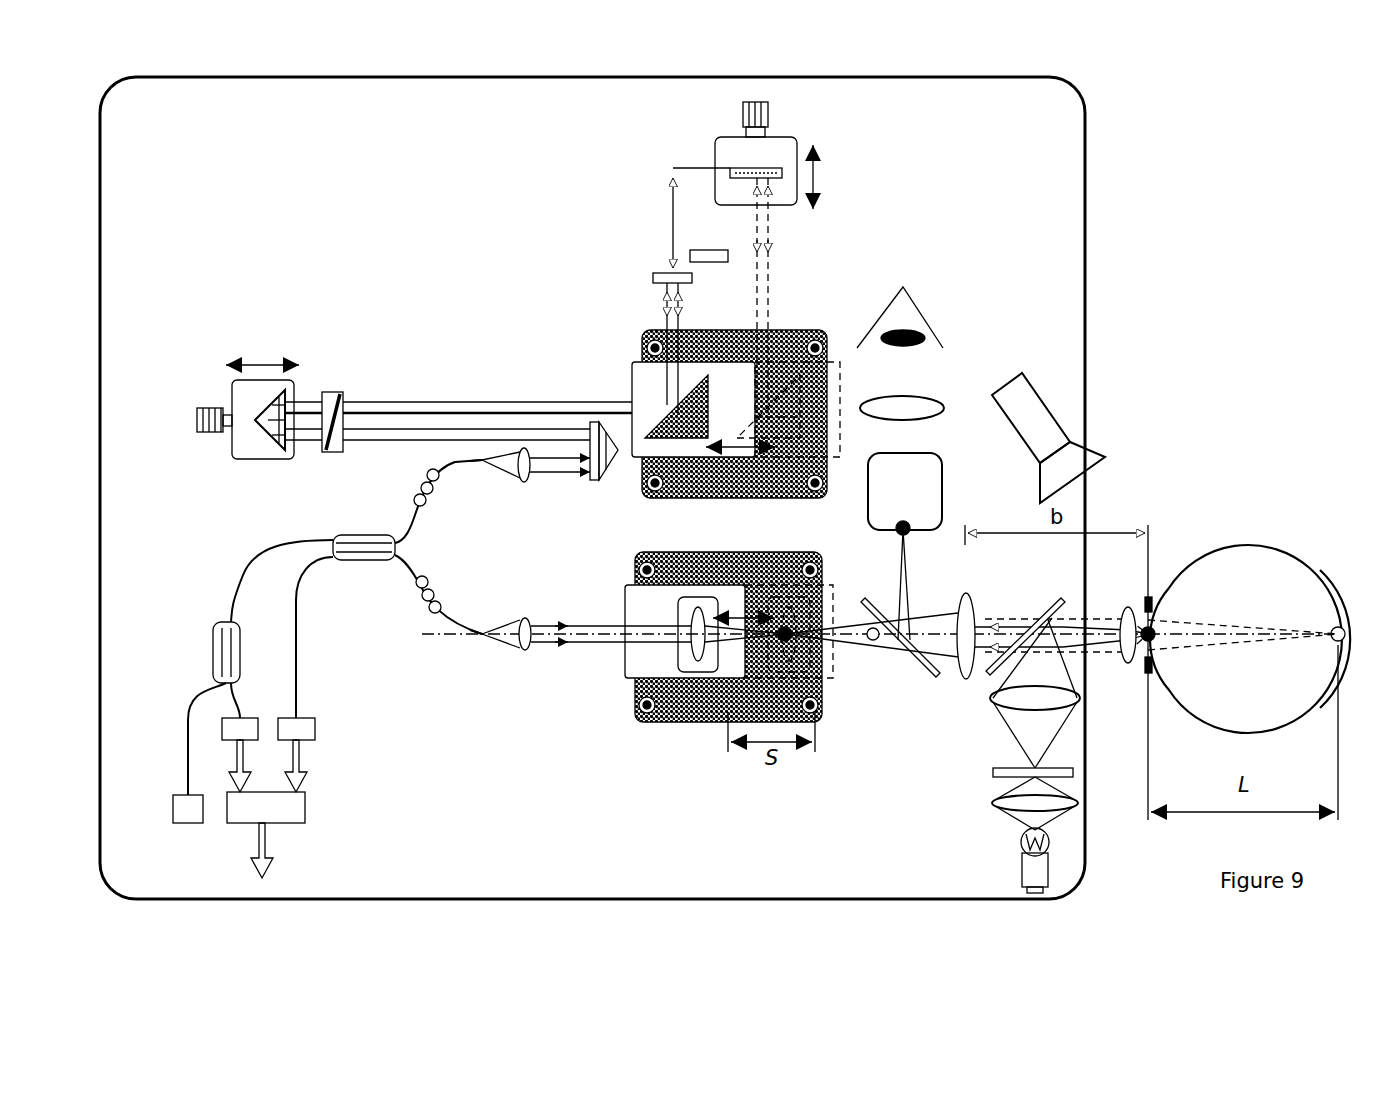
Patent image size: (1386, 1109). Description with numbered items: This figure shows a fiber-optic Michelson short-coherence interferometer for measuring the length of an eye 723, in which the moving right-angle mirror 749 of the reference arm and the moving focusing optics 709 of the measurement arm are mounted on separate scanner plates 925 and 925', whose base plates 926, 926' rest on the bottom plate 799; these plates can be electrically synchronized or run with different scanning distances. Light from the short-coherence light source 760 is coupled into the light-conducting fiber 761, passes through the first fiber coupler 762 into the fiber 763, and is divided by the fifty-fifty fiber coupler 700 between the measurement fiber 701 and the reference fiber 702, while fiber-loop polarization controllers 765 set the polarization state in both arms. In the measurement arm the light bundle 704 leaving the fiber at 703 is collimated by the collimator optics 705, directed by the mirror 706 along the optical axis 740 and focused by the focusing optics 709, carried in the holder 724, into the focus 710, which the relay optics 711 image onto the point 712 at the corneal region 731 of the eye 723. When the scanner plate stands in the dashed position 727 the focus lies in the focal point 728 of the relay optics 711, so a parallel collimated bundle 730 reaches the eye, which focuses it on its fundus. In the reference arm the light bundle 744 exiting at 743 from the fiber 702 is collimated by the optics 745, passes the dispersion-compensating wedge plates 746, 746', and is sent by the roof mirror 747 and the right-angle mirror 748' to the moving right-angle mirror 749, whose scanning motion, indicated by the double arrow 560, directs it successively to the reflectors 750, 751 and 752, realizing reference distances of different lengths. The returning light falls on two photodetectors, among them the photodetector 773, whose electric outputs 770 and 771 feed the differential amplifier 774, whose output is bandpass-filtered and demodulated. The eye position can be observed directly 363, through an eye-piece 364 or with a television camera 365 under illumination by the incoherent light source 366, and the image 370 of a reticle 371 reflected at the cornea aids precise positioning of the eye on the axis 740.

The bottom plate 799 is at (1075, 120).
The roof mirror 747 is at (277, 407).
The wedge plate 746 is at (310, 387).
The wedge plate 746' is at (350, 386).
The fiber exit 743 is at (484, 462).
The reference light bundle 744 is at (500, 458).
The fiber collimator optics 745 is at (523, 455).
The beam combiner prism 748' is at (573, 401).
The moving right-angle mirror 749 is at (660, 378).
The reflector 750 is at (655, 270).
The reflector 751 is at (712, 248).
The reflector 752 is at (773, 168).
The translation stage 926 is at (702, 375).
The scanner plate 925 is at (666, 373).
The displacement arrow 560 is at (742, 457).
The dashed-line position 727 is at (840, 458).
The direct observation 363 is at (918, 335).
The eye-piece 364 is at (912, 398).
The television camera 365 is at (922, 483).
The incoherent light source 366 is at (1033, 430).
The fiber coupler 700 is at (355, 562).
The fiber-loop polarization controllers 765 is at (412, 587).
The interferometer reference arm 702 is at (460, 470).
The interferometer measurement arm 701 is at (453, 612).
The fiber 763 is at (228, 592).
The first fiber coupler 762 is at (215, 657).
The light-conducting fiber 761 is at (185, 772).
The short-coherence light source 760 is at (190, 815).
The photodetector 773 is at (260, 717).
The electric output 771 is at (243, 755).
The electric output 770 is at (300, 783).
The differential amplifier 774 is at (290, 813).
The translation stage 926' is at (701, 607).
The scanner plate 925' is at (662, 603).
The focusing optics 709 is at (697, 662).
The holder 724 is at (708, 665).
The focus 710 is at (790, 640).
The fiber exit 703 is at (482, 638).
The light bundle 704 is at (510, 640).
The fiber collimator optics 705 is at (530, 652).
The focal point 728 is at (878, 640).
The relay optics 711 is at (958, 605).
The parallel collimated light bundle 730 is at (1015, 618).
The reticle image 370 is at (1095, 618).
The point 712 is at (1125, 610).
The pupil 731 is at (1145, 645).
The eye 723 is at (1180, 610).
The mirror 706 is at (1338, 628).
The optical axis 740 is at (1362, 637).
The reticle 371 is at (995, 773).